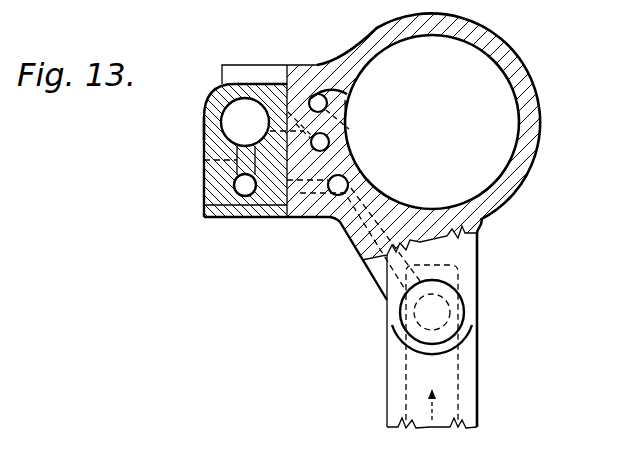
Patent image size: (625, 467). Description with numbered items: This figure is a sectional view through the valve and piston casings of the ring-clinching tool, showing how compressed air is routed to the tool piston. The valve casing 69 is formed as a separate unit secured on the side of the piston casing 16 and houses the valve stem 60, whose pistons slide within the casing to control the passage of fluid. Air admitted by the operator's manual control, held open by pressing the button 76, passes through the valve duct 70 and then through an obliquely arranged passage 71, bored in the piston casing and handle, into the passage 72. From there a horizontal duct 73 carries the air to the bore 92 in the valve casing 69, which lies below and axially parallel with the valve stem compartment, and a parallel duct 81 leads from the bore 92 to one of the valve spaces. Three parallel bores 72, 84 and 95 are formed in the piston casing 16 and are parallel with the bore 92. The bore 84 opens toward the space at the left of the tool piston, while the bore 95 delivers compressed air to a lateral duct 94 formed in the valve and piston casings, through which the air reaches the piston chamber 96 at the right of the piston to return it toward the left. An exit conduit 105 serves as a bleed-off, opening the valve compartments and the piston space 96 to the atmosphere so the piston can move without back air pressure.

The piston casing 16 is at (526, 72).
The valve stem 60 is at (226, 118).
The valve casing 69 is at (210, 102).
The valve duct 70 is at (456, 392).
The obliquely arranged passage 71 is at (347, 243).
The passage 72 is at (334, 195).
The horizontal duct 73 is at (298, 218).
The button 76 is at (420, 316).
The duct 81 is at (203, 159).
The bore 84 is at (342, 149).
The bore 92 is at (235, 218).
The duct 94 is at (346, 107).
The bore 95 is at (314, 92).
The piston chamber 96 is at (432, 122).
The exit conduit 105 is at (203, 127).